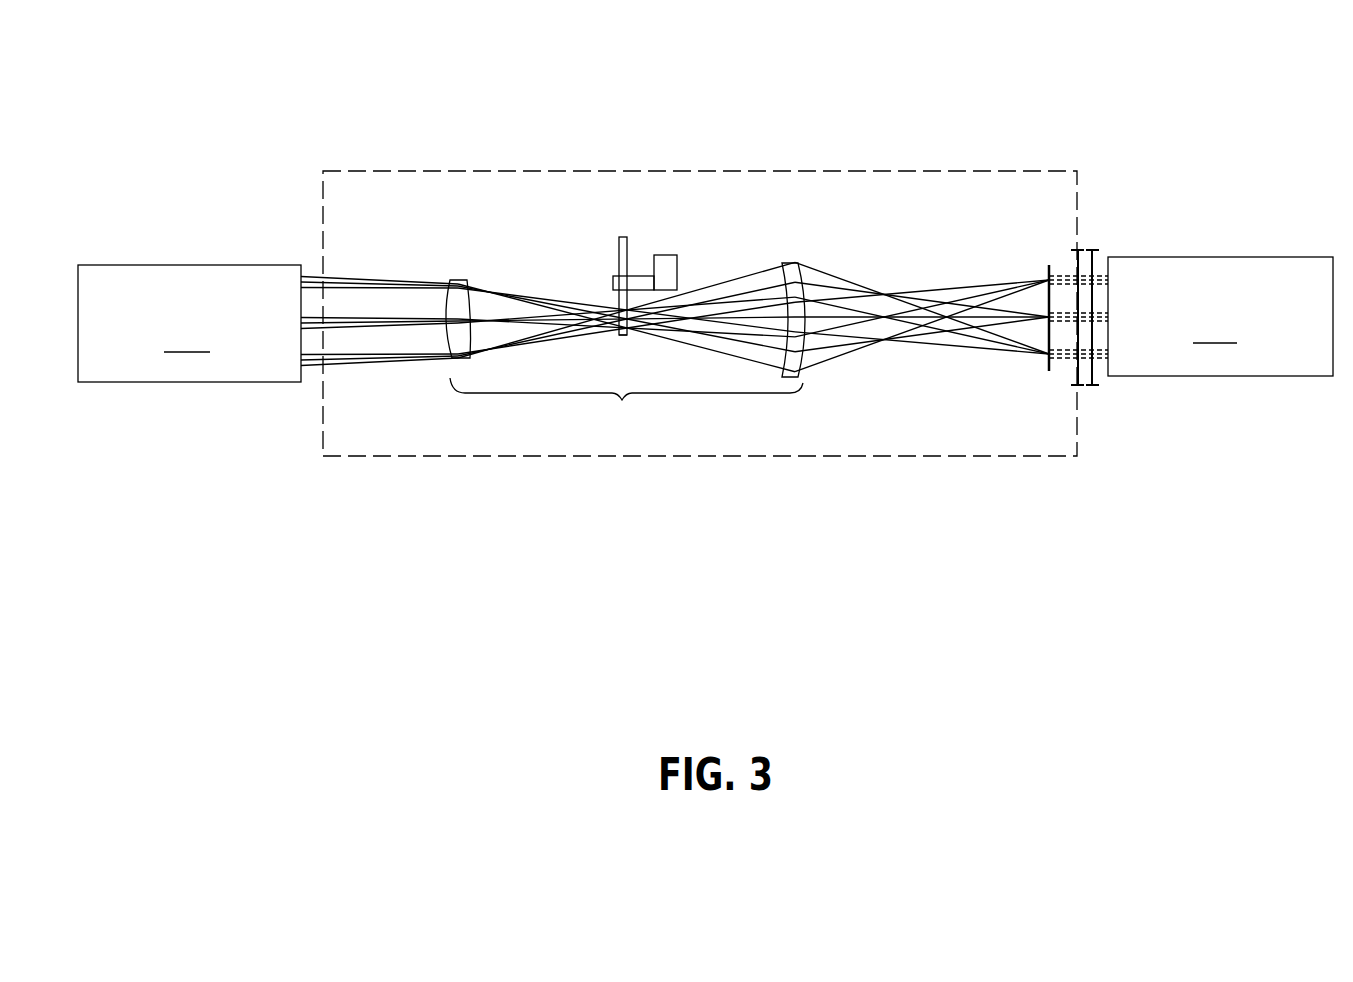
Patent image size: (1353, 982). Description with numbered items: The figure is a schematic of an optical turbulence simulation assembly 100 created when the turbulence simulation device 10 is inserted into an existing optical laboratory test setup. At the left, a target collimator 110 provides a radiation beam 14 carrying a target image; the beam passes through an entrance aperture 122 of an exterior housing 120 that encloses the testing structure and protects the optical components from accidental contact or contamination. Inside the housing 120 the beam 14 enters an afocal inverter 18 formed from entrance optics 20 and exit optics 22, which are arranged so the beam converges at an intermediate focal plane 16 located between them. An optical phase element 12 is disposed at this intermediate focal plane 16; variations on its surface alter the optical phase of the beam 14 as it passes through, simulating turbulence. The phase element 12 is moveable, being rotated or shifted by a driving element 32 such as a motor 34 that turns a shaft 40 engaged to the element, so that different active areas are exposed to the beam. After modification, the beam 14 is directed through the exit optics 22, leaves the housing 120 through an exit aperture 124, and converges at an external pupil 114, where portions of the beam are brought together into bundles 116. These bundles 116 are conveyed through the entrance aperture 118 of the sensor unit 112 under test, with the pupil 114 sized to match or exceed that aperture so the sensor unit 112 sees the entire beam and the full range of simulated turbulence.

The optical turbulence simulation assembly 100 is at (430, 88).
The turbulence simulation device 10 is at (560, 220).
The optical phase element 12 is at (615, 265).
The radiation beam 14 is at (412, 365).
The intermediate focal plane 16 is at (626, 337).
The afocal inverter 18 is at (626, 347).
The entrance optics 20 is at (467, 280).
The exit optics 22 is at (780, 263).
The driving element 32 is at (673, 233).
The motor 34 is at (677, 283).
The shaft 40 is at (638, 282).
The target collimator 110 is at (189, 323).
The sensor unit 112 is at (1220, 316).
The external pupil 114 is at (1052, 268).
The bundles 116 is at (1043, 313).
The entrance aperture 118 is at (1091, 250).
The exterior housing 120 is at (929, 458).
The entrance aperture 122 is at (318, 349).
The exit aperture 124 is at (1076, 372).